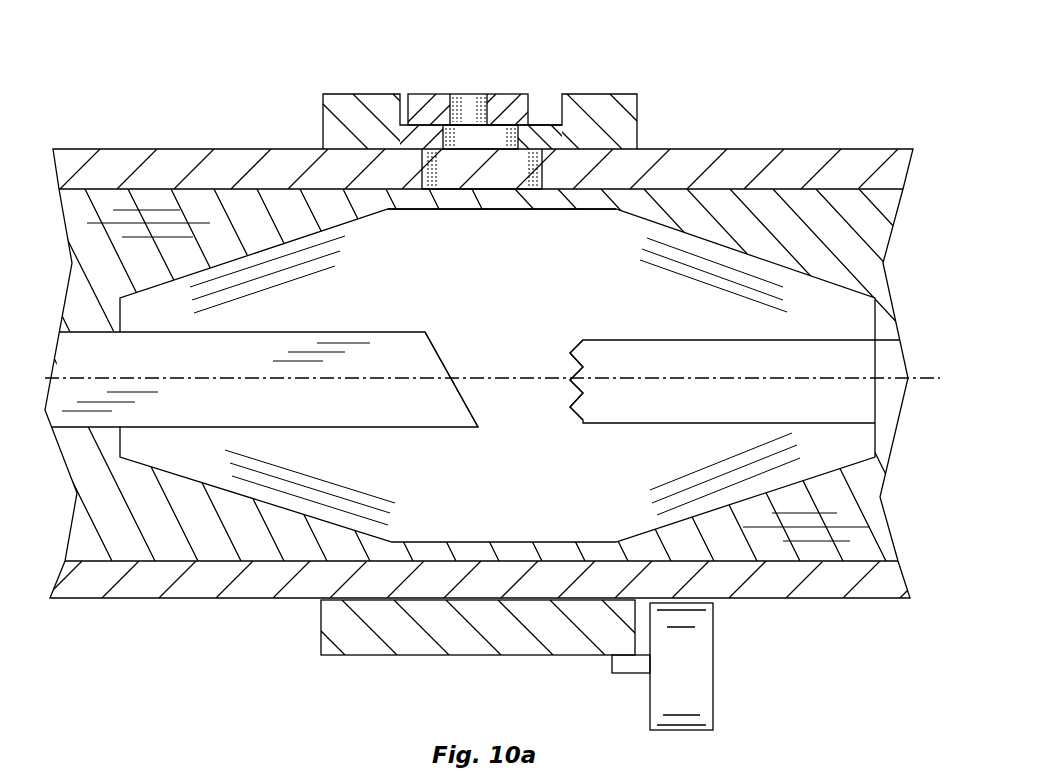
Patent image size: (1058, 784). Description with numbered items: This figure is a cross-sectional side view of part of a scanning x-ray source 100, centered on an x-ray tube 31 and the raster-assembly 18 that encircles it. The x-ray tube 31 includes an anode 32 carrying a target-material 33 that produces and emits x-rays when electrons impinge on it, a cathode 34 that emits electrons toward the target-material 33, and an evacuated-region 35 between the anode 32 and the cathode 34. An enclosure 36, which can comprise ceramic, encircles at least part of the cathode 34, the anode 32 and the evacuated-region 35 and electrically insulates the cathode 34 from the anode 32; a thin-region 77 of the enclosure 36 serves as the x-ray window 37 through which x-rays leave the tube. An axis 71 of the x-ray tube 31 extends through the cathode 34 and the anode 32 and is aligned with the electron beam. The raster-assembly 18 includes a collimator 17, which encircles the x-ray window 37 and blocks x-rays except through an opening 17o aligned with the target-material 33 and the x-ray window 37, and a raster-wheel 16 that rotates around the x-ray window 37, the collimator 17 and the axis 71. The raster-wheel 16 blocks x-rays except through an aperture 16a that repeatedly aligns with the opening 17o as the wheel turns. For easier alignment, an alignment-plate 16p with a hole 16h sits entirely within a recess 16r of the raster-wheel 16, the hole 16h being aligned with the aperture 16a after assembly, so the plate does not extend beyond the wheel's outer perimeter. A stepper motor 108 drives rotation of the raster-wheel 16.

The scanning x-ray source 100 is at (179, 48).
The raster-assembly 18 is at (708, 104).
The raster-wheel 16 is at (363, 137).
The alignment-plate 16p is at (423, 94).
The hole 16h is at (467, 107).
The aperture 16a is at (497, 137).
The recess 16r is at (545, 123).
The x-ray tube 31 is at (890, 492).
The collimator 17 is at (195, 187).
The opening 17o is at (505, 185).
The enclosure 36 is at (850, 238).
The x-ray window 37 is at (407, 195).
The thin-region 77 is at (430, 202).
The anode 32 is at (255, 418).
The target-material 33 is at (440, 353).
The axis 71 is at (536, 378).
The cathode 34 is at (583, 387).
The evacuated-region 35 is at (558, 418).
The stepper motor 108 is at (735, 658).